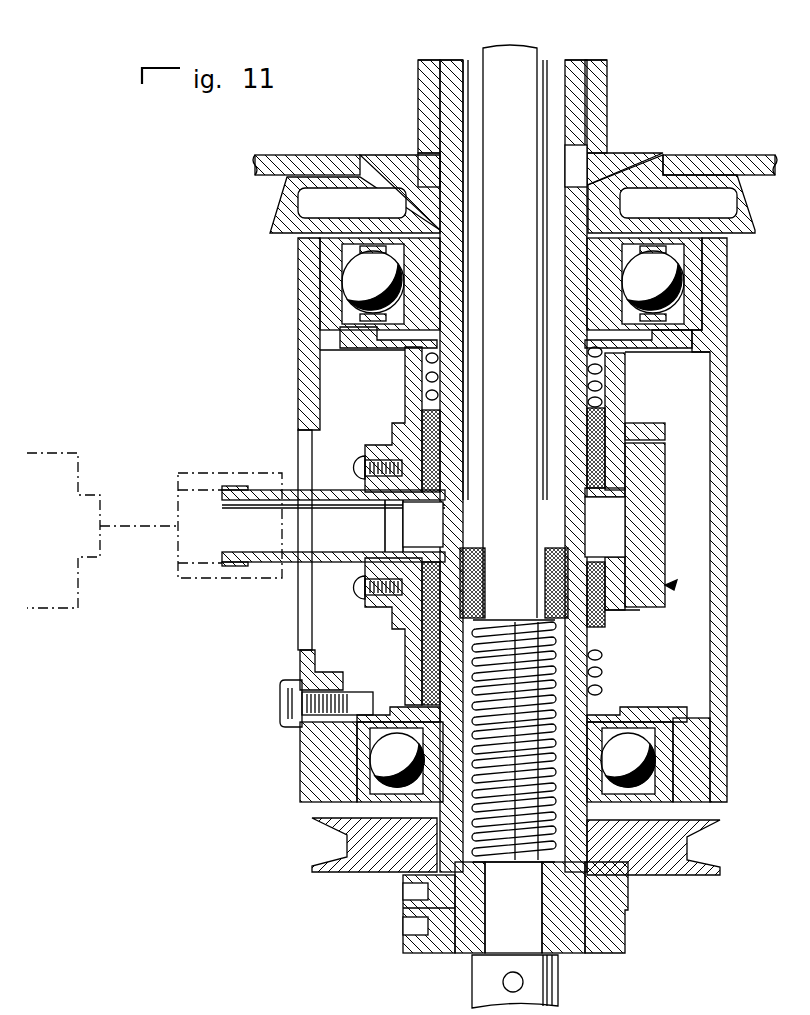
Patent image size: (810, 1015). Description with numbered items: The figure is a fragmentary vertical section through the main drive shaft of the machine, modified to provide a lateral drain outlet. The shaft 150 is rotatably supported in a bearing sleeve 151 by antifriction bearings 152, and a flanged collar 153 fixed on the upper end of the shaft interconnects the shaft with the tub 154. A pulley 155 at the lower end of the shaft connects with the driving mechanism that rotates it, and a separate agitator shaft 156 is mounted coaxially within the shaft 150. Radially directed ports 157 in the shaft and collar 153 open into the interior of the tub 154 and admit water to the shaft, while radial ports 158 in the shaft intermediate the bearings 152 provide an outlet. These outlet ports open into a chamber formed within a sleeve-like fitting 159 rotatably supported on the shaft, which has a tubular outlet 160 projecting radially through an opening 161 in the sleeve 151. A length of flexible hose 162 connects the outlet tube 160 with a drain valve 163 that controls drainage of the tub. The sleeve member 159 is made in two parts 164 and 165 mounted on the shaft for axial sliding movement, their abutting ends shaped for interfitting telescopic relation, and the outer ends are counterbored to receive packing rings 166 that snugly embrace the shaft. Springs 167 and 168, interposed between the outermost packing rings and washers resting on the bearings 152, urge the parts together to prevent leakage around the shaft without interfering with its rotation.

The main drive shaft 150 is at (448, 63).
The bearing sleeve 151 is at (301, 318).
The antifriction bearings 152 is at (357, 348).
The flanged collar 153 is at (288, 195).
The tub 154 is at (276, 160).
The pulley 155 is at (320, 876).
The agitator shaft 156 is at (471, 985).
The radially directed ports 157 is at (426, 136).
The radial ports 158 is at (454, 526).
The sleeve-like fitting 159 is at (672, 583).
The tubular outlet 160 is at (236, 566).
The opening 161 is at (306, 628).
The flexible hose 162 is at (200, 472).
The drain valve 163 is at (76, 453).
The sleeve part 164 is at (640, 612).
The sleeve part 165 is at (655, 427).
The packing rings 166 is at (627, 405).
The spring 167 is at (603, 369).
The spring 168 is at (603, 675).